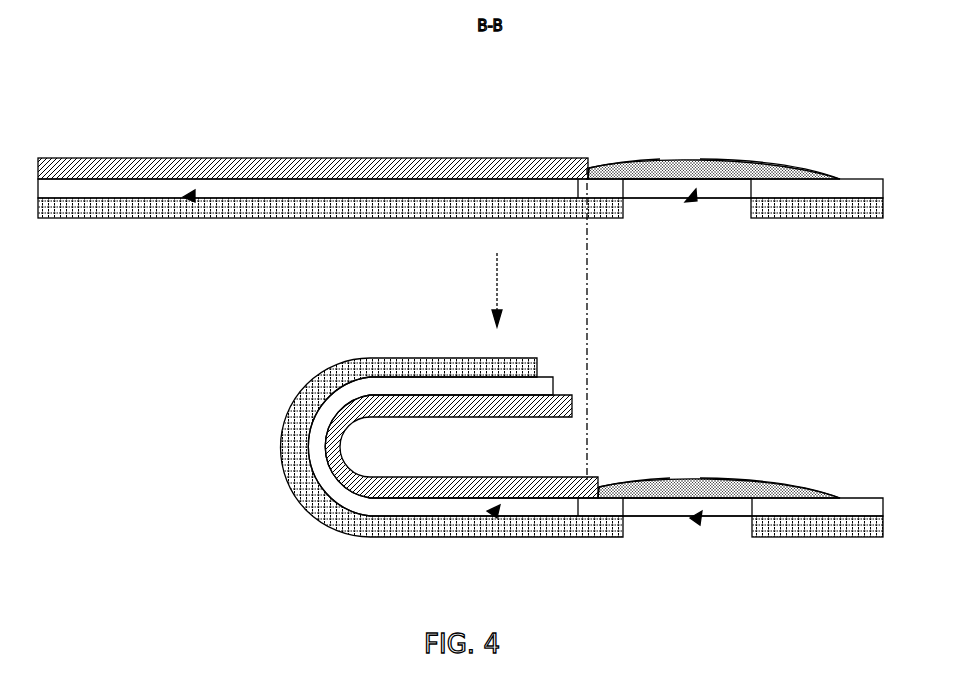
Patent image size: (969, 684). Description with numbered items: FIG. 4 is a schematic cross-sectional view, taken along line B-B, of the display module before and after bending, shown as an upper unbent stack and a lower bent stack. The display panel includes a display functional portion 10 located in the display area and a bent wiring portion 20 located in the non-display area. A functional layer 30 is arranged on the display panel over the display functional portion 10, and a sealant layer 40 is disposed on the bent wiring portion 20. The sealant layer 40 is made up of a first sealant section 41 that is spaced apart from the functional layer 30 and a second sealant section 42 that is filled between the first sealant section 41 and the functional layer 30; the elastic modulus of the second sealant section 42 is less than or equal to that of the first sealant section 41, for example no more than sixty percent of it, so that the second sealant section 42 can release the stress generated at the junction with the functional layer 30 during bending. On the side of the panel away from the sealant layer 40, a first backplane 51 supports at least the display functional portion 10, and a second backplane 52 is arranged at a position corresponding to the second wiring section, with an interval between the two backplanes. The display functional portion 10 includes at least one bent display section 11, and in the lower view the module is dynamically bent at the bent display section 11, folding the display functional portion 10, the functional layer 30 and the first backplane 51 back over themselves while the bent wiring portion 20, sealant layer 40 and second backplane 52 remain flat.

The display functional portion 10 is at (185, 219).
The bent display section 11 is at (308, 452).
The bent wiring portion 20 is at (686, 205).
The functional layer 30 is at (265, 158).
The sealant layer 40 is at (626, 96).
The first sealant section 41 is at (786, 161).
The second sealant section 42 is at (601, 166).
The first backplane 51 is at (430, 219).
The second backplane 52 is at (806, 219).